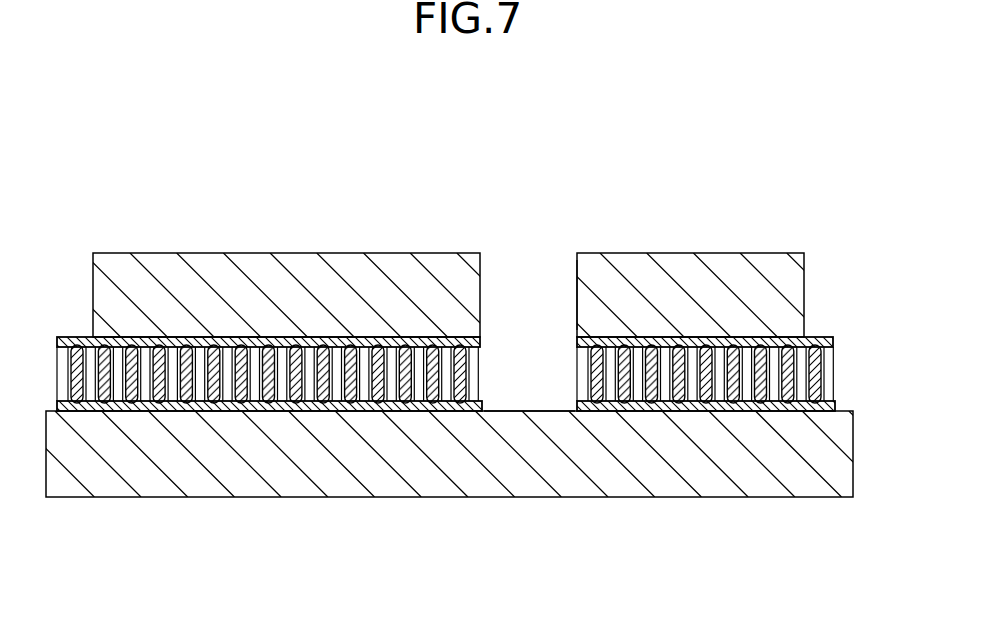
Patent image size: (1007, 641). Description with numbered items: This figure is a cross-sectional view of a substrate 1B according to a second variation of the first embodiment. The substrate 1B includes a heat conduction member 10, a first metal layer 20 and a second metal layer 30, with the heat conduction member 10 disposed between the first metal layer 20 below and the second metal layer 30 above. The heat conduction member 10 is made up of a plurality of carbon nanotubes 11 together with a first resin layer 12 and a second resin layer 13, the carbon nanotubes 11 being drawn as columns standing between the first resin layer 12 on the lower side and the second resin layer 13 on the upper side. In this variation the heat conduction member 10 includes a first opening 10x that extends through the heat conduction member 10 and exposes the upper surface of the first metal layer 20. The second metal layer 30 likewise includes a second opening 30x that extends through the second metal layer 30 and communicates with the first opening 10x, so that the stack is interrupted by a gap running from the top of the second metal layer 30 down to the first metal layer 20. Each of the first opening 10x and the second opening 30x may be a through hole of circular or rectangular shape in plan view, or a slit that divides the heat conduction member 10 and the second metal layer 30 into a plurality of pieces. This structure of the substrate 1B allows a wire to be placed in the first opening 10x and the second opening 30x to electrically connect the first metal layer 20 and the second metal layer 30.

The substrate 1B is at (66, 161).
The heat conduction member 10 is at (502, 374).
The first opening 10x is at (481, 406).
The carbon nanotubes 11 is at (475, 374).
The first resin layer 12 is at (828, 405).
The second resin layer 13 is at (828, 345).
The first metal layer 20 is at (833, 452).
The second metal layer 30 is at (802, 295).
The second opening 30x is at (577, 317).